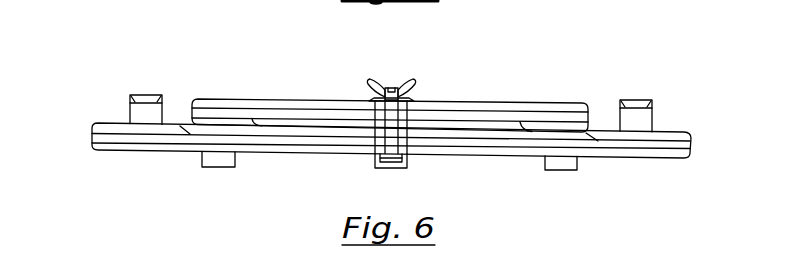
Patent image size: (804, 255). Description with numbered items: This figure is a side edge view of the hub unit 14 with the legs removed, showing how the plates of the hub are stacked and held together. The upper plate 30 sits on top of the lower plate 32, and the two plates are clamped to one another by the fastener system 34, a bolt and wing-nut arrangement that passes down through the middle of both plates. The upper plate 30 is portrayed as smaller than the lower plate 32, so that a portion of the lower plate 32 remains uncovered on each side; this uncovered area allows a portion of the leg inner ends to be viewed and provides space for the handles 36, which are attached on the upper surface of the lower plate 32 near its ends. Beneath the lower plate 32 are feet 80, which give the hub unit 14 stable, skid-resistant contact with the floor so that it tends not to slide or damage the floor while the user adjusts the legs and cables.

The hub unit 14 is at (150, 62).
The upper plate 30 is at (458, 110).
The lower plate 32 is at (177, 143).
The fastener system 34 is at (397, 83).
The handles 36 is at (138, 100).
The feet 80 is at (220, 158).